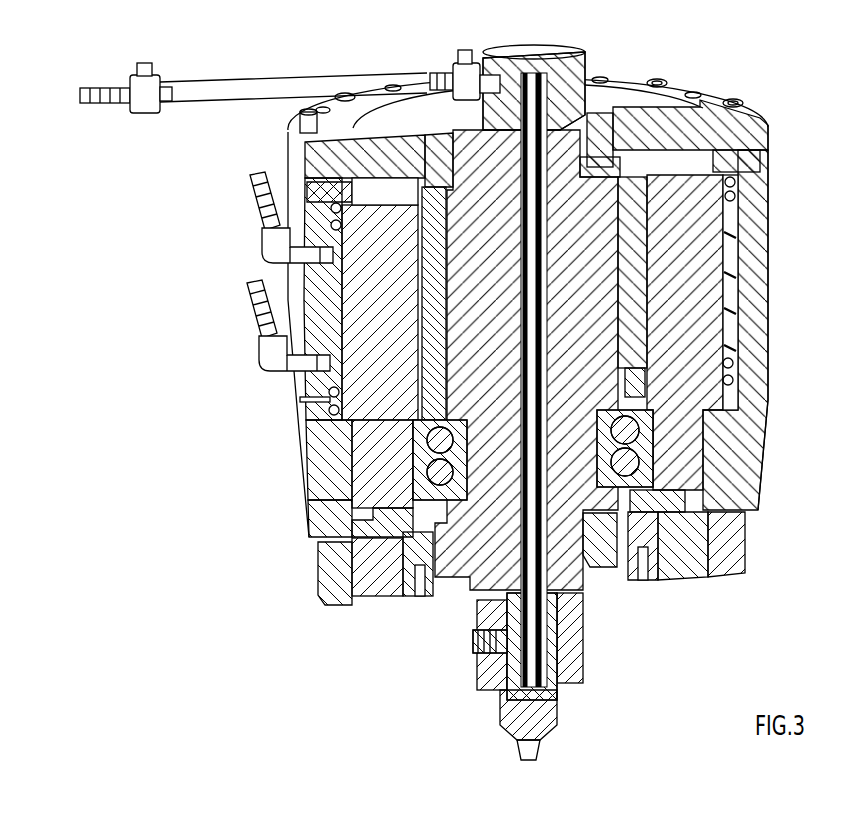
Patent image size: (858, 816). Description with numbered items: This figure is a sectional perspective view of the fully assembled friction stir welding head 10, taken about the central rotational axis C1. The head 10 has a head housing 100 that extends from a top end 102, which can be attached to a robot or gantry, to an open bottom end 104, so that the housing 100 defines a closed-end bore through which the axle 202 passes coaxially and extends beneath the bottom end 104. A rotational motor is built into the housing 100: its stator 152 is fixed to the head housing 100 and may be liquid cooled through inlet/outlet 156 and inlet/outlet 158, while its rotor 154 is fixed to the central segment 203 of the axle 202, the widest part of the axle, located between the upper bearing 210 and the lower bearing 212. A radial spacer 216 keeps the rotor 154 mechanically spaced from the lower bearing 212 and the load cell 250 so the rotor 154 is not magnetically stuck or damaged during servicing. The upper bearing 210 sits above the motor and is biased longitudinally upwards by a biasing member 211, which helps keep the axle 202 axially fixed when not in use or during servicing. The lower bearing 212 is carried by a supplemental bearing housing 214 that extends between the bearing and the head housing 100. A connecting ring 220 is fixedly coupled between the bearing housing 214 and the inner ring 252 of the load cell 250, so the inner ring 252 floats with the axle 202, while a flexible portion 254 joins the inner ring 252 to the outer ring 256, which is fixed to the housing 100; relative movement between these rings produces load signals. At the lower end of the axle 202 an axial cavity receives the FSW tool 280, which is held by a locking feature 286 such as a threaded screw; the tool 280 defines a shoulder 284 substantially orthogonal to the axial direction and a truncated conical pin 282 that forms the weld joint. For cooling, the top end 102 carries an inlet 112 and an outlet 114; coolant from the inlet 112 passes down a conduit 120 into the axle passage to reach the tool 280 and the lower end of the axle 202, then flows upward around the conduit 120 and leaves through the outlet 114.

The head 10 is at (122, 314).
The rotational axis C1 is at (113, 384).
The head housing 100 is at (317, 520).
The top end 102 is at (757, 127).
The bottom end 104 is at (320, 543).
The inlet 112 is at (140, 88).
The outlet 114 is at (462, 58).
The conduit 120 is at (545, 568).
The stator 152 is at (710, 210).
The rotor 154 is at (420, 208).
The inlet/outlet 156 is at (262, 337).
The inlet/outlet 158 is at (262, 228).
The axle 202 is at (607, 297).
The central segment 203 is at (603, 227).
The upper bearing 210 is at (610, 140).
The biasing member 211 is at (613, 163).
The lower bearing 212 is at (440, 485).
The bearing housing 214 is at (370, 420).
The spacer 216 is at (647, 371).
The connecting ring 220 is at (673, 507).
The load cell 250 is at (507, 598).
The inner ring 252 is at (411, 597).
The flexible portion 254 is at (380, 597).
The outer ring 256 is at (323, 590).
The FSW tool 280 is at (547, 642).
The pin 282 is at (533, 750).
The shoulder 284 is at (547, 733).
The locking feature 286 is at (477, 643).